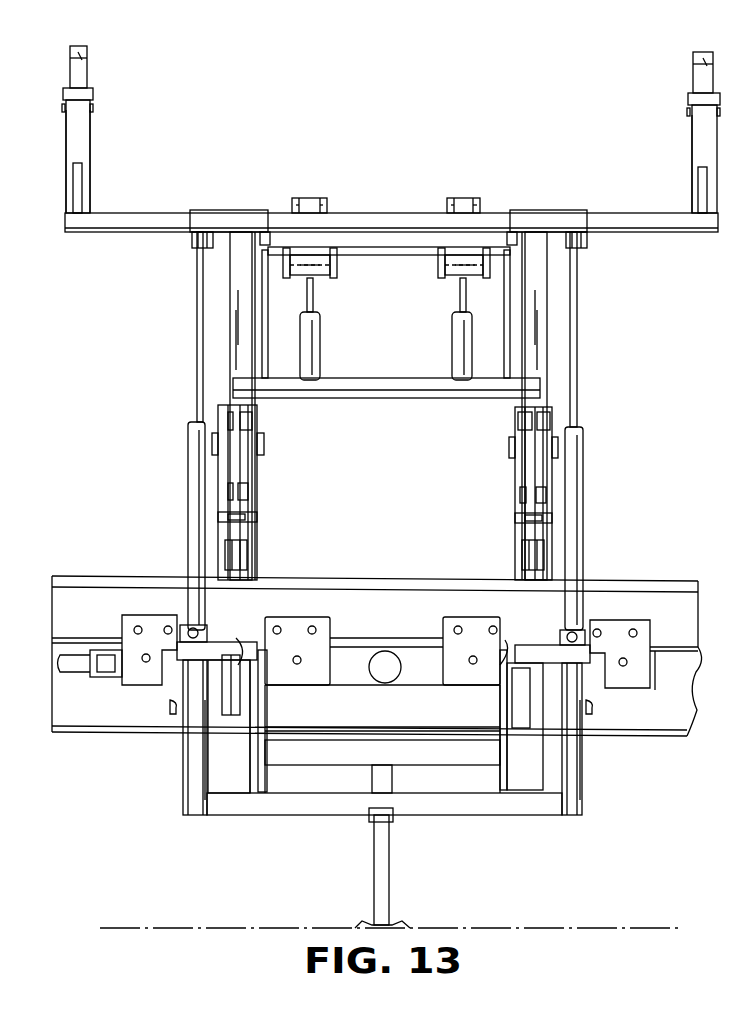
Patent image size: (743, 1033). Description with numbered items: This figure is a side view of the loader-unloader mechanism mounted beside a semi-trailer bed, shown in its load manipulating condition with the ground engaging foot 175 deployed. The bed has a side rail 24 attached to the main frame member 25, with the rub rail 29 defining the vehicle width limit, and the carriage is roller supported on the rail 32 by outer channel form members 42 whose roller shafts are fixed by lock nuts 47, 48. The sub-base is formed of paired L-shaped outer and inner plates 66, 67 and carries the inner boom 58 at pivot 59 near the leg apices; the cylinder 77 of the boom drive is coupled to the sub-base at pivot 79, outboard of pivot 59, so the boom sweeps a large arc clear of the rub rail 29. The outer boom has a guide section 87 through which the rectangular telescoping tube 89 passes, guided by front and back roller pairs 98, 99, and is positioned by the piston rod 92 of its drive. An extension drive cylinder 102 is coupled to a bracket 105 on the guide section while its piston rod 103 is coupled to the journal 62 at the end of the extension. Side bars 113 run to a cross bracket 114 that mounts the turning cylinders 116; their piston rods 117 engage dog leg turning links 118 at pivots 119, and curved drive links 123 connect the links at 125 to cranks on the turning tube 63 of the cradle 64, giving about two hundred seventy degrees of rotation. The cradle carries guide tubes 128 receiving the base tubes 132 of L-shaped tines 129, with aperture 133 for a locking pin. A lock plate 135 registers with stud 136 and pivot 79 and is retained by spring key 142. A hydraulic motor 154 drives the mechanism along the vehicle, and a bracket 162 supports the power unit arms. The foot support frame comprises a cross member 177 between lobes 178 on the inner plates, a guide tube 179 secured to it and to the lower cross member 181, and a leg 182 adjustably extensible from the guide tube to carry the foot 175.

The side rail 24 is at (685, 643).
The main frame member 25 is at (680, 733).
The rub rail 29 is at (660, 580).
The rail 32 is at (672, 650).
The outer channel form member 42 is at (130, 640).
The lock nut 47 is at (280, 625).
The lock nut 48 is at (297, 665).
The inner boom 58 is at (257, 592).
The pivot 59 is at (237, 640).
The journal 62 is at (210, 210).
The turning tube 63 is at (140, 214).
The load engaging cradle 64 is at (90, 172).
The outer plate 66 is at (200, 770).
The inner plate 67 is at (252, 782).
The cylinder 77 is at (226, 700).
The pivot 79 is at (170, 710).
The guide section 87 is at (252, 470).
The telescoping tube 89 is at (231, 338).
The piston rod 92 is at (240, 565).
The front roller pair 98 is at (232, 425).
The back roller pair 99 is at (245, 500).
The cylinder 102 is at (195, 500).
The piston rod 103 is at (234, 320).
The bracket 105 is at (185, 630).
The side bar 113 is at (268, 345).
The cross bracket 114 is at (356, 390).
The turning cylinder 116 is at (318, 344).
The piston rod 117 is at (306, 295).
The dog leg turning link 118 is at (286, 270).
The pivot 119 is at (320, 285).
The drive link 123 is at (310, 198).
The pivotal connection 125 is at (292, 205).
The guide tube 128 is at (85, 131).
The tine 129 is at (72, 62).
The base tube 132 is at (88, 78).
The aperture 133 is at (62, 108).
The lock plate 135 is at (185, 748).
The stud 136 is at (183, 800).
The spring key 142 is at (590, 716).
The hydraulic motor 154 is at (383, 655).
The bracket 162 is at (105, 675).
The ground engaging foot 175 is at (400, 925).
The cross member 177 is at (413, 762).
The lobe 178 is at (522, 730).
The guide tube 179 is at (372, 780).
The lower cross member 181 is at (432, 815).
The leg 182 is at (377, 855).